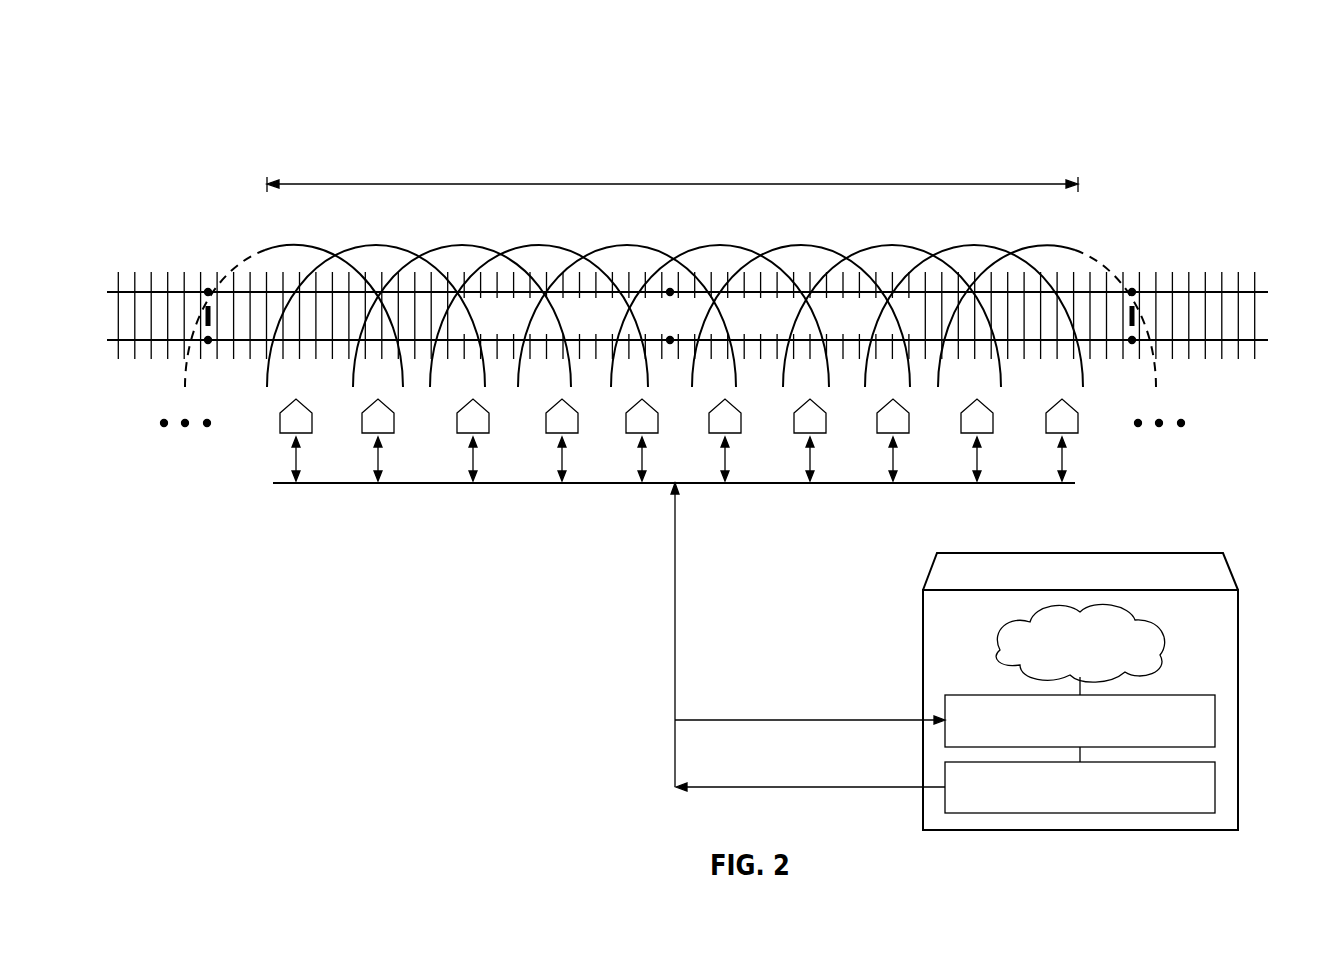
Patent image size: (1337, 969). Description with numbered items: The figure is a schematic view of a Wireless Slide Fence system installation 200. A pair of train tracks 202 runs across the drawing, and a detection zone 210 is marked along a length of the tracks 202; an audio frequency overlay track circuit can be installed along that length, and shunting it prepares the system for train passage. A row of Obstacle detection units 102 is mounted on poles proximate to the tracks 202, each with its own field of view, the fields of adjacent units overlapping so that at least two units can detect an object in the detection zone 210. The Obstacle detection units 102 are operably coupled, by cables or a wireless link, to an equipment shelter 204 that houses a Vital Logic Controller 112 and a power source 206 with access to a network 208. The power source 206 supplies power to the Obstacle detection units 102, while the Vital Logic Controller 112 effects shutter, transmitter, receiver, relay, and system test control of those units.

The Wireless Slide Fence system installation 200 is at (335, 53).
The train tracks 202 is at (1173, 240).
The detection zone 210 is at (687, 183).
The Obstacle detection unit 102 is at (280, 423).
The equipment shelter 204 is at (1080, 553).
The network 208 is at (1165, 643).
The Vital Logic Controller 112 is at (1215, 720).
The power source 206 is at (1215, 787).